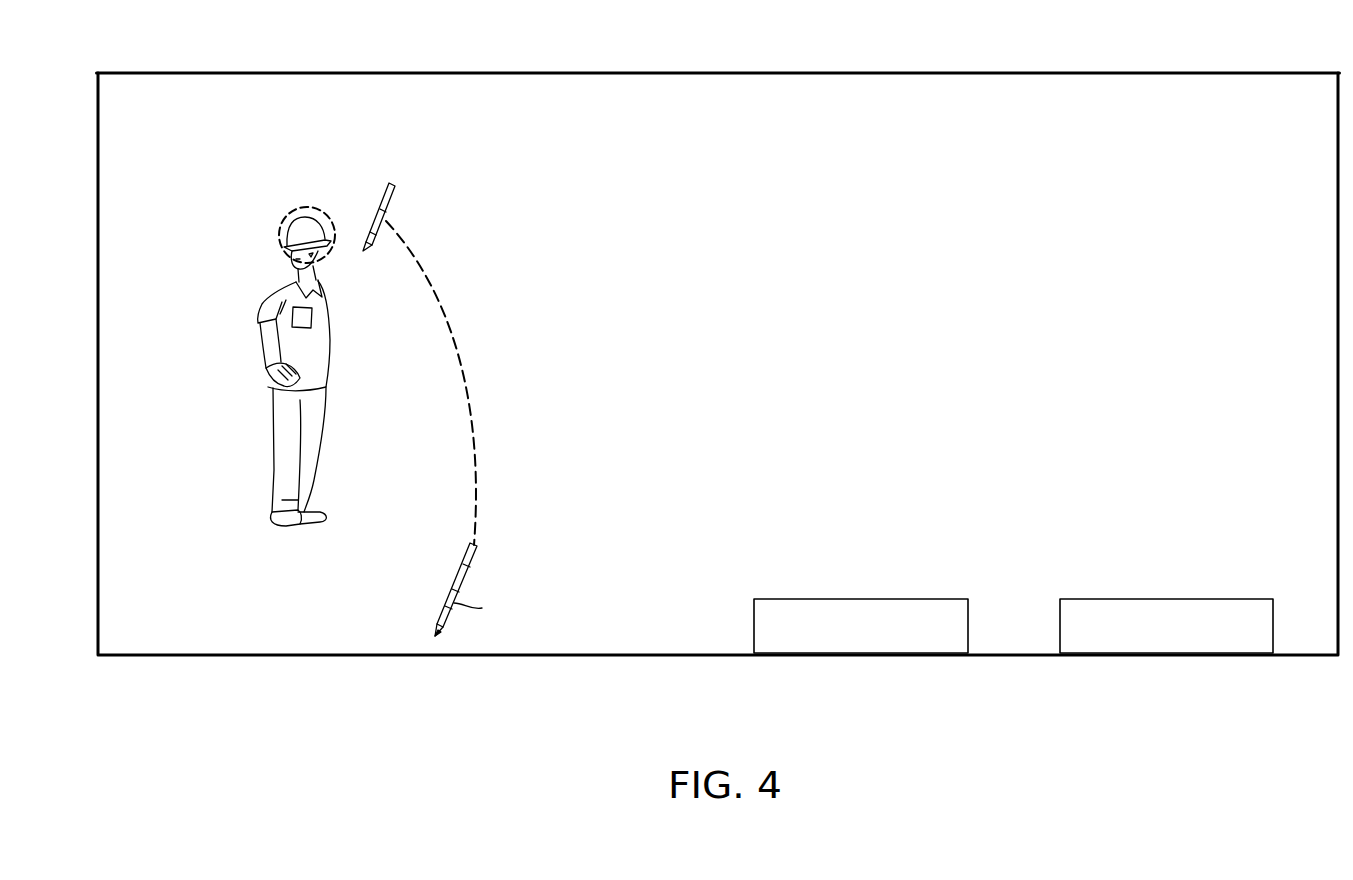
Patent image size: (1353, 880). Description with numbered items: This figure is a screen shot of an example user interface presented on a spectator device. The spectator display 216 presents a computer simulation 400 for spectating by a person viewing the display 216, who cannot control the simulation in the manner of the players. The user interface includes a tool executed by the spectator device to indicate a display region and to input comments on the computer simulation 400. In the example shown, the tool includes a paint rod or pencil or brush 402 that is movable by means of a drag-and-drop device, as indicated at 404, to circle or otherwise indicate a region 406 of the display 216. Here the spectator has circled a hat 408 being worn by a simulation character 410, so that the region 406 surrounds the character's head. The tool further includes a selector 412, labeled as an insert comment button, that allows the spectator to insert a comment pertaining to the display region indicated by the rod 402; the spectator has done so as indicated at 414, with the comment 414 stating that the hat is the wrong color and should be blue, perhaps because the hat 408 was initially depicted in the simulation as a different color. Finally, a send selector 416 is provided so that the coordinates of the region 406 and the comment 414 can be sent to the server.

The computer simulation 400 is at (585, 140).
The spectator display 216 is at (717, 73).
The paint rod or pencil or brush 402 is at (453, 585).
The drag-and-drop device 404 is at (363, 253).
The region of the display 406 is at (282, 225).
The hat 408 is at (305, 219).
The simulation character 410 is at (262, 309).
The selector 412 is at (860, 657).
The comment 414 is at (990, 507).
The send selector 416 is at (1167, 657).